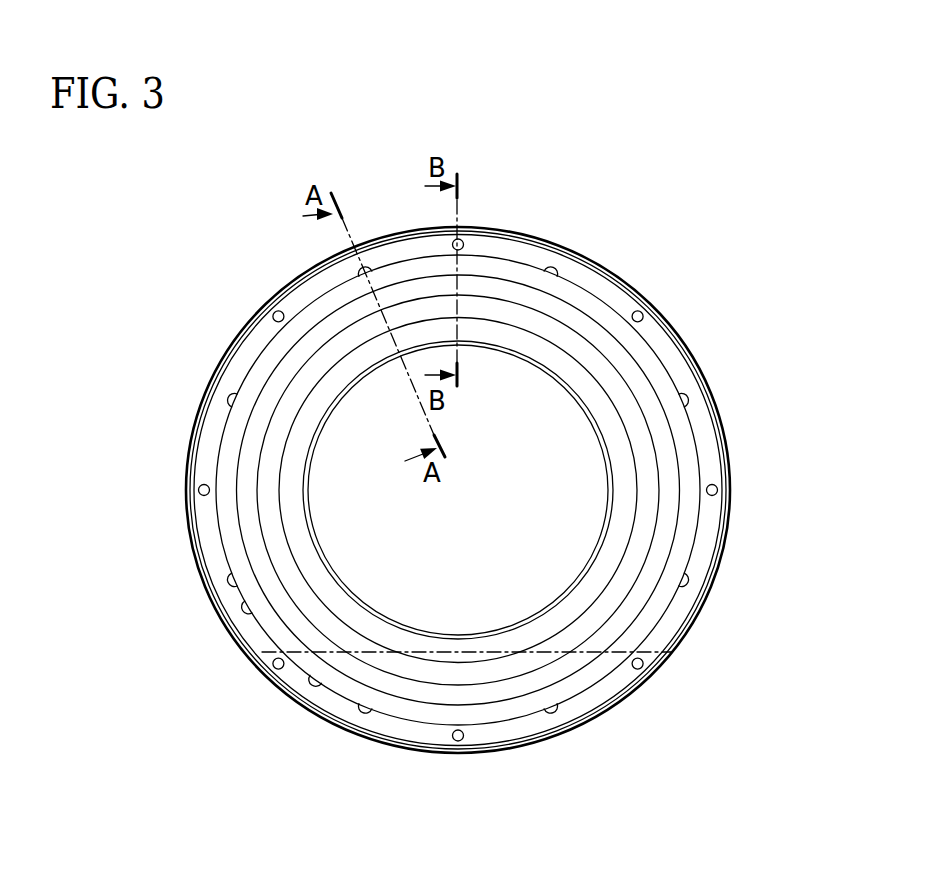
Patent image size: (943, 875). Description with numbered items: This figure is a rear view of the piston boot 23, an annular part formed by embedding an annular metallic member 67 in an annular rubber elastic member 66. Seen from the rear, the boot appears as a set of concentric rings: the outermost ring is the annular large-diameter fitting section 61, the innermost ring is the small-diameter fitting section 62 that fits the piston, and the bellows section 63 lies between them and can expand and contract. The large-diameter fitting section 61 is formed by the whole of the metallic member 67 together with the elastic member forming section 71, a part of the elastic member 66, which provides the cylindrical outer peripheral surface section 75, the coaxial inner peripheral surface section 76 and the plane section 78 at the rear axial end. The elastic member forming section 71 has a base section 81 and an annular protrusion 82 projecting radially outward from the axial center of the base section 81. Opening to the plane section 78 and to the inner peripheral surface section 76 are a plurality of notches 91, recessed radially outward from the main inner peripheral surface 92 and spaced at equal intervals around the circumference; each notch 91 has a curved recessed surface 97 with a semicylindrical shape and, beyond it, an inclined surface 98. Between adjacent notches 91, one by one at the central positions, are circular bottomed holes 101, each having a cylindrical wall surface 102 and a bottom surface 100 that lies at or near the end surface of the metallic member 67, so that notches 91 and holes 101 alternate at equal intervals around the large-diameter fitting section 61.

The piston boot 23 is at (742, 292).
The large-diameter fitting section 61 is at (702, 428).
The small-diameter fitting section 62 is at (626, 519).
The bellows section 63 is at (670, 467).
The elastic member 66 is at (702, 558).
The metallic member 67 is at (641, 667).
The elastic member forming section 71 is at (673, 617).
The outer peripheral surface section 75 is at (190, 538).
The inner peripheral surface section 76 is at (253, 606).
The plane section 78 is at (217, 558).
The base section 81 is at (203, 518).
The protrusion 82 is at (189, 492).
The notch 91 is at (553, 273).
The main inner peripheral surface 92 is at (318, 681).
The curved recessed surface 97 is at (558, 694).
The inclined surface 98 is at (364, 712).
The bottom surface 100 is at (457, 742).
The hole 101 is at (643, 311).
The wall surface 102 is at (275, 665).